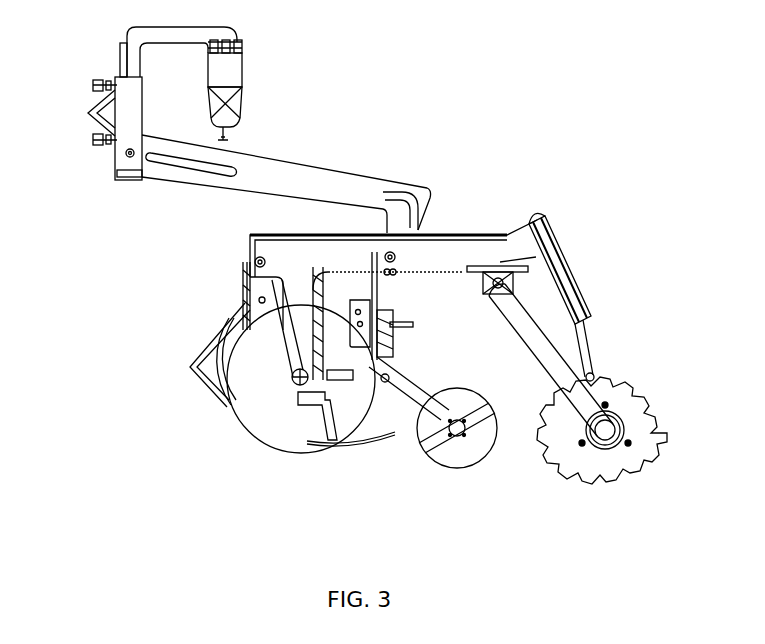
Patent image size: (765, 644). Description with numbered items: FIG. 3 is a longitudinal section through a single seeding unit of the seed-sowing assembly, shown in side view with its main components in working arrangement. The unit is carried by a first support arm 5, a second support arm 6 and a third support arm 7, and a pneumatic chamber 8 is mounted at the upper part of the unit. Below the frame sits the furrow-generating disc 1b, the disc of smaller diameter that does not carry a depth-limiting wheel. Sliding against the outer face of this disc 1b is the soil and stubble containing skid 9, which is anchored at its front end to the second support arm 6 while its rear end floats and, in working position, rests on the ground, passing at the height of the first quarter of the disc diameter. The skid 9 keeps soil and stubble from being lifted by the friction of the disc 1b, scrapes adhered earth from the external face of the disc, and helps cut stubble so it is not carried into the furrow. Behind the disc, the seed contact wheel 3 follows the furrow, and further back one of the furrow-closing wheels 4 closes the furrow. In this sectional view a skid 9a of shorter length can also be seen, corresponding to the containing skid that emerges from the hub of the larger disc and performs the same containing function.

The furrow-generating disc 1b is at (262, 417).
The seed contact wheel 3 is at (440, 447).
The furrow-closing wheel 4 is at (587, 443).
The first support arm 5 is at (192, 168).
The second support arm 6 is at (470, 247).
The third support arm 7 is at (517, 310).
The pneumatic chamber 8 is at (244, 93).
The containing skid 9 is at (217, 400).
The skid 9a is at (365, 435).